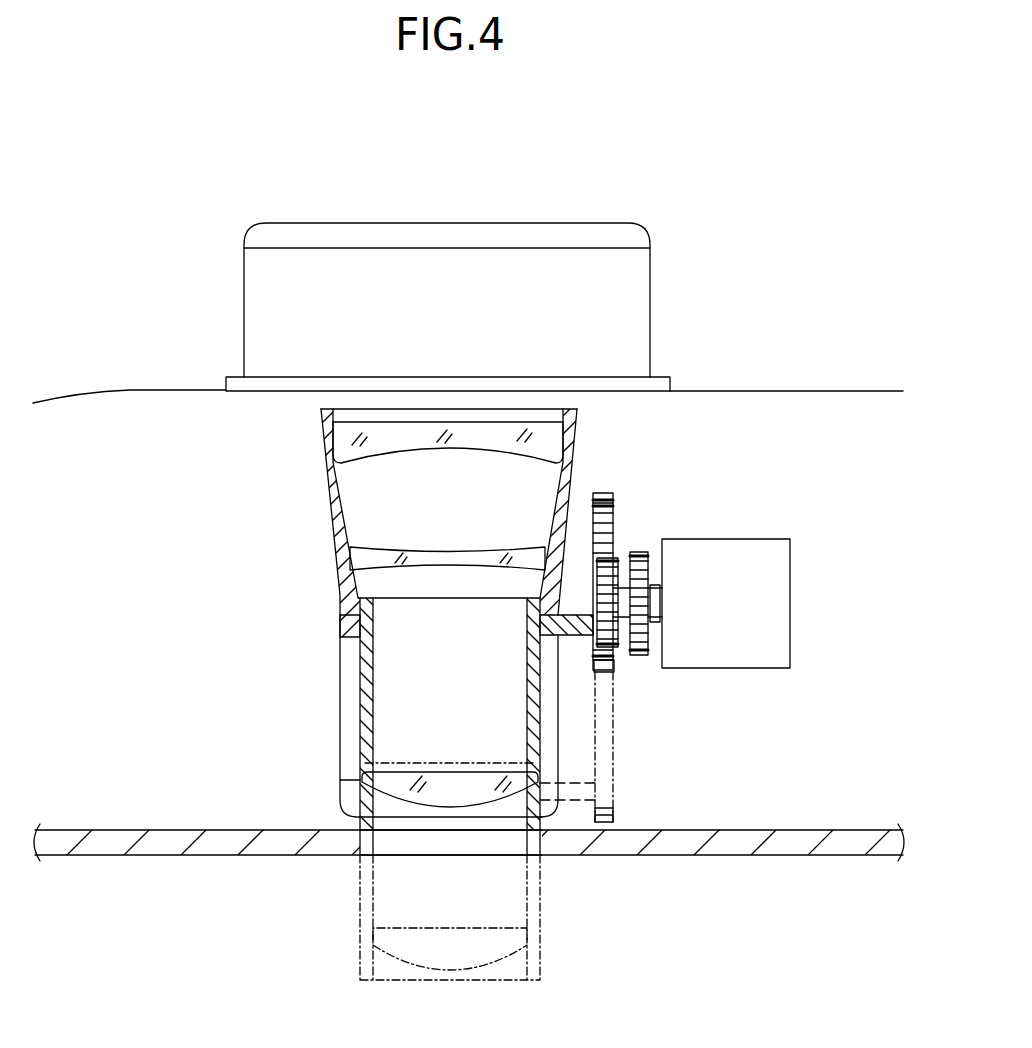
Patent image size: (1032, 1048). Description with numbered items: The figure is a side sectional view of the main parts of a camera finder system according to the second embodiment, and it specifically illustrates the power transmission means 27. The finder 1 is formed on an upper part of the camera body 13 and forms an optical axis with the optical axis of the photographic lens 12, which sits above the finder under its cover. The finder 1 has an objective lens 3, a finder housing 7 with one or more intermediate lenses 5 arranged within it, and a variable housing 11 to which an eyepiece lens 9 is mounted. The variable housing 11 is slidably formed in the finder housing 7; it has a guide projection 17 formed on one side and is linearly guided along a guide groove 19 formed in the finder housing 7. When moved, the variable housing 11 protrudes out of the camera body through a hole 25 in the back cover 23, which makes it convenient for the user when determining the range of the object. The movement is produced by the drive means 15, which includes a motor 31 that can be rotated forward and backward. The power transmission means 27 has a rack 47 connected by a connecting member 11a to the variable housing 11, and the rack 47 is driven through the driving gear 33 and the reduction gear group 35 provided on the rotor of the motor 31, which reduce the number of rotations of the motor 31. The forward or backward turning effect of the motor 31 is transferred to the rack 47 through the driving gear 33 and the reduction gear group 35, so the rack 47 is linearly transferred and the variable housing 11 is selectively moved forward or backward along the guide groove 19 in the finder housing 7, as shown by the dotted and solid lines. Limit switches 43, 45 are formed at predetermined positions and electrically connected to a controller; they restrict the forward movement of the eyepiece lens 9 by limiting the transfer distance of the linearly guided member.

The finder 1 is at (240, 541).
The objective lens 3 is at (348, 440).
The intermediate lenses 5 is at (372, 555).
The finder housing 7 is at (337, 490).
The eyepiece lens 9 is at (372, 773).
The variable housing 11 is at (365, 727).
The connecting member 11a is at (577, 635).
The photographic lens 12 is at (450, 268).
The camera body 13 is at (790, 235).
The drive means 15 is at (812, 663).
The guide projection 17 is at (348, 622).
The guide groove 19 is at (350, 678).
The back cover 23 is at (803, 843).
The hole 25 is at (437, 845).
The power transmission means 27 is at (670, 692).
The motor 31 is at (775, 602).
The driving gear 33 is at (640, 656).
The reduction gear group 35 is at (610, 567).
The limit switch 43 is at (603, 492).
The limit switch 45 is at (605, 822).
The rack 47 is at (603, 518).